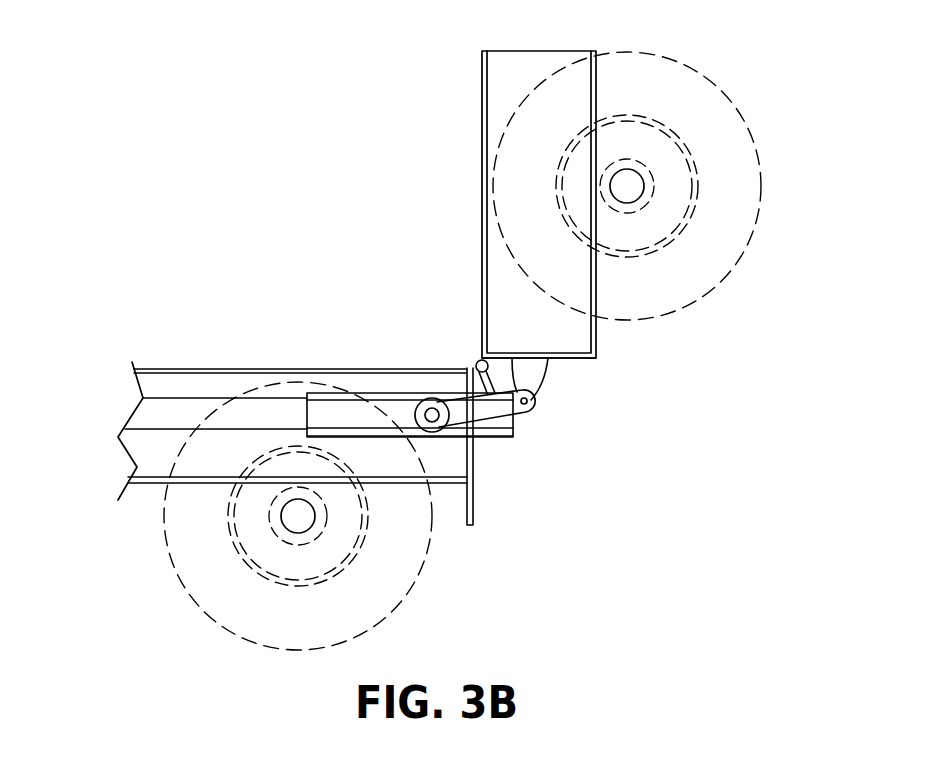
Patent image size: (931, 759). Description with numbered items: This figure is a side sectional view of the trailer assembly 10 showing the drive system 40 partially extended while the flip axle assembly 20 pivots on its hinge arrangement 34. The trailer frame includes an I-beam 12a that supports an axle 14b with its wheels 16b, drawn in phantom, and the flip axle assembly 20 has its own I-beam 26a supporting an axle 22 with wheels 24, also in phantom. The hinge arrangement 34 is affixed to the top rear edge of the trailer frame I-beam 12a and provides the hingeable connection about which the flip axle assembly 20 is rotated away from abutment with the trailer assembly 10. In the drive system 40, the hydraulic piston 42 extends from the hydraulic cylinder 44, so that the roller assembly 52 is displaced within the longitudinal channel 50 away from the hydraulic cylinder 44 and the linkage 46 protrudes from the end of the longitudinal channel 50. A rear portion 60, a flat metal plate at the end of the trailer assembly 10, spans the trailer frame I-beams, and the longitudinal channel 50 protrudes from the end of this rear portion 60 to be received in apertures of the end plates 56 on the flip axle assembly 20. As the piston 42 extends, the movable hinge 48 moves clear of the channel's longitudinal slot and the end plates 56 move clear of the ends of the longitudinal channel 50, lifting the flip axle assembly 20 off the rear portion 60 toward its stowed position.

The trailer assembly 10 is at (162, 252).
The I-beam 12a is at (143, 368).
The axle 14b is at (297, 532).
The wheels 16b is at (224, 621).
The flip axle assembly 20 is at (428, 166).
The axle 22 is at (643, 193).
The wheels 24 is at (685, 67).
The I-beam 26a is at (510, 60).
The hinge arrangement 34 is at (477, 362).
The drive system 40 is at (96, 480).
The hydraulic piston 42 is at (322, 415).
The hydraulic cylinder 44 is at (203, 407).
The linkage 46 is at (460, 407).
The movable hinge 48 is at (545, 383).
The longitudinal channel 50 is at (486, 437).
The roller assembly 52 is at (416, 402).
The end plates 56 is at (575, 361).
The rear portion 60 is at (473, 520).